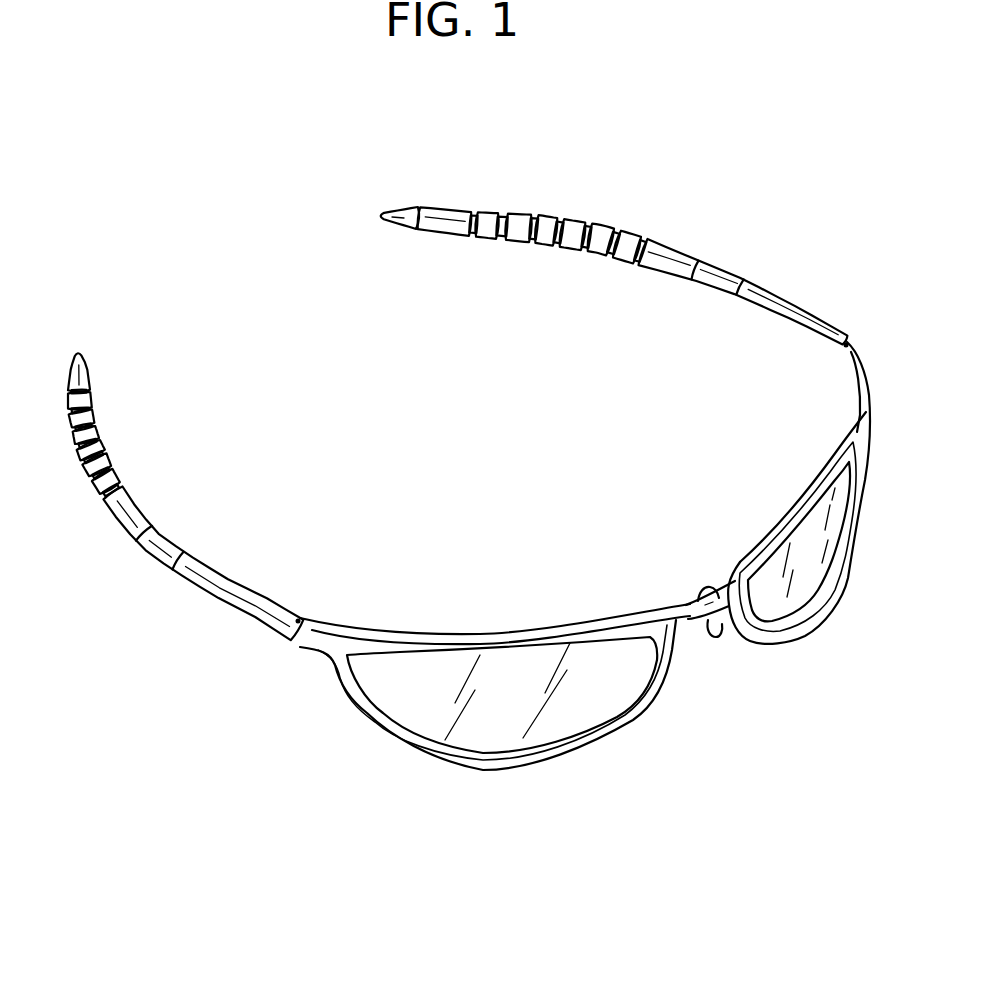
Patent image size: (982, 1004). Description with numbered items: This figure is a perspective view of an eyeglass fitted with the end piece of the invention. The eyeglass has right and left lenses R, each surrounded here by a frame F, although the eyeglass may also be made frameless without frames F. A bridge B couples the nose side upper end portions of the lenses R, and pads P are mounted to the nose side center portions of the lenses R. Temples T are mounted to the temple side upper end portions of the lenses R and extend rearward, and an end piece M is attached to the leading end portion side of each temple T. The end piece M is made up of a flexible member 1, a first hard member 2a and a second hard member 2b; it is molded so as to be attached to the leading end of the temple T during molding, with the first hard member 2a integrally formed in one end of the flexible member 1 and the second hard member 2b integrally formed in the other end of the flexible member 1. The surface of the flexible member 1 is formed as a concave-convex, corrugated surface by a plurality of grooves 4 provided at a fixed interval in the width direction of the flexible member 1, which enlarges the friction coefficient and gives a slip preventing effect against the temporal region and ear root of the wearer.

The flexible member 1 is at (603, 218).
The first hard member 2a is at (723, 260).
The second hard member 2b is at (402, 204).
The grooves 4 is at (533, 242).
The end piece M is at (362, 345).
The temple T is at (463, 418).
The frame F is at (585, 589).
The bridge B is at (693, 623).
The pad P is at (713, 640).
The lens R is at (570, 713).